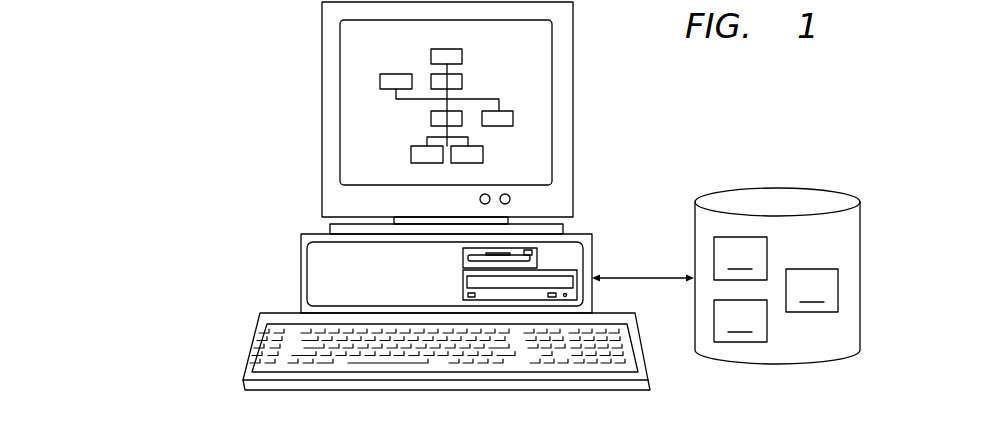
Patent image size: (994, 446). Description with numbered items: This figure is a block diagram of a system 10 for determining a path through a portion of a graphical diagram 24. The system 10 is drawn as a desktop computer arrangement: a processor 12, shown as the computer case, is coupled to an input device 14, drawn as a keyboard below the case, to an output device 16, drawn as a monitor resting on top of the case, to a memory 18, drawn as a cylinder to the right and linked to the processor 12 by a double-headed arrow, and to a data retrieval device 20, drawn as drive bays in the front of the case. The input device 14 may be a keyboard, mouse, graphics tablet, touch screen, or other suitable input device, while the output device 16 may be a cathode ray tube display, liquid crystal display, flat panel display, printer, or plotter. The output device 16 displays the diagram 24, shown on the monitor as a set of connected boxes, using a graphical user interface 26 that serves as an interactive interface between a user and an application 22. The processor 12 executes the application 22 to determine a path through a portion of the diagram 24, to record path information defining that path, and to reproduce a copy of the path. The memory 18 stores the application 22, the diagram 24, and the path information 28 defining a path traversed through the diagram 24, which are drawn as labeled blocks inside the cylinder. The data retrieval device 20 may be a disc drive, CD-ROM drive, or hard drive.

The system 10 is at (162, 45).
The processor 12 is at (593, 254).
The input device 14 is at (244, 367).
The output device 16 is at (573, 108).
The memory 18 is at (777, 186).
The data retrieval device 20 is at (463, 277).
The application 22 is at (740, 321).
The graphical diagram 24 is at (496, 79).
The graphical user interface 26 is at (340, 103).
The path information 28 is at (740, 258).